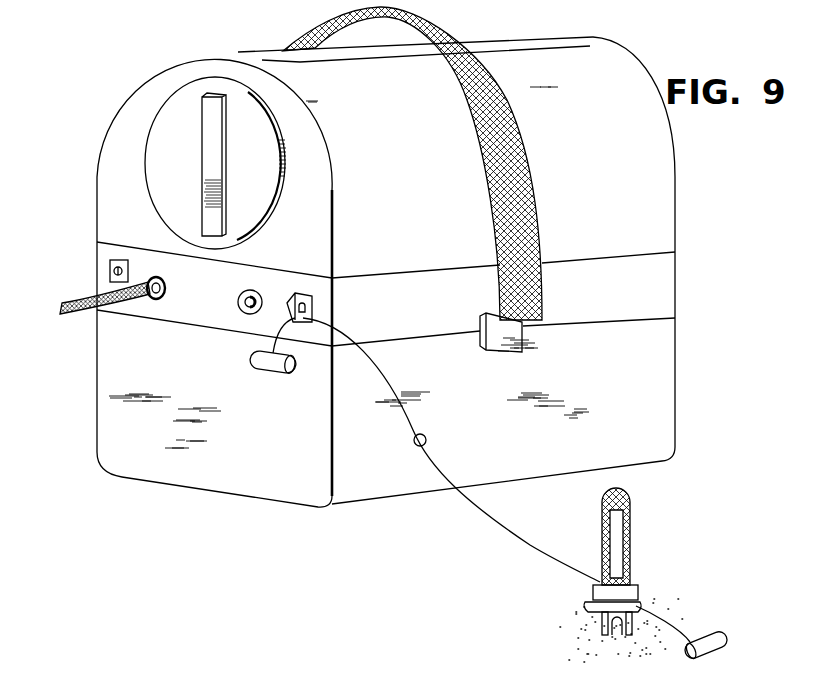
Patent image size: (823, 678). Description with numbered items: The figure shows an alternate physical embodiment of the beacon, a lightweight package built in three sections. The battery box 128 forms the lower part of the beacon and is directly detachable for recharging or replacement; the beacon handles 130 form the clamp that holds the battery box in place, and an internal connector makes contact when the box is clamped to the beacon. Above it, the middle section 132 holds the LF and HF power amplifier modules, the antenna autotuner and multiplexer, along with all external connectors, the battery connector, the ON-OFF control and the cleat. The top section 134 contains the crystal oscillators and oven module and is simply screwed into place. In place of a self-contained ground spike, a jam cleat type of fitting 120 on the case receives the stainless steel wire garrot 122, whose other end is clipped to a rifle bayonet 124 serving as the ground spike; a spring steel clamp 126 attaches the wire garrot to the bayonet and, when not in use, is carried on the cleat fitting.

The jam cleat type of fitting 120 is at (312, 300).
The stainless steel wire garrot 122 is at (426, 440).
The rifle bayonet 124 is at (607, 635).
The spring steel clamp 126 is at (631, 586).
The battery box 128 is at (677, 459).
The beacon handles 130 is at (540, 283).
The middle section 132 is at (648, 299).
The top section 134 is at (617, 146).